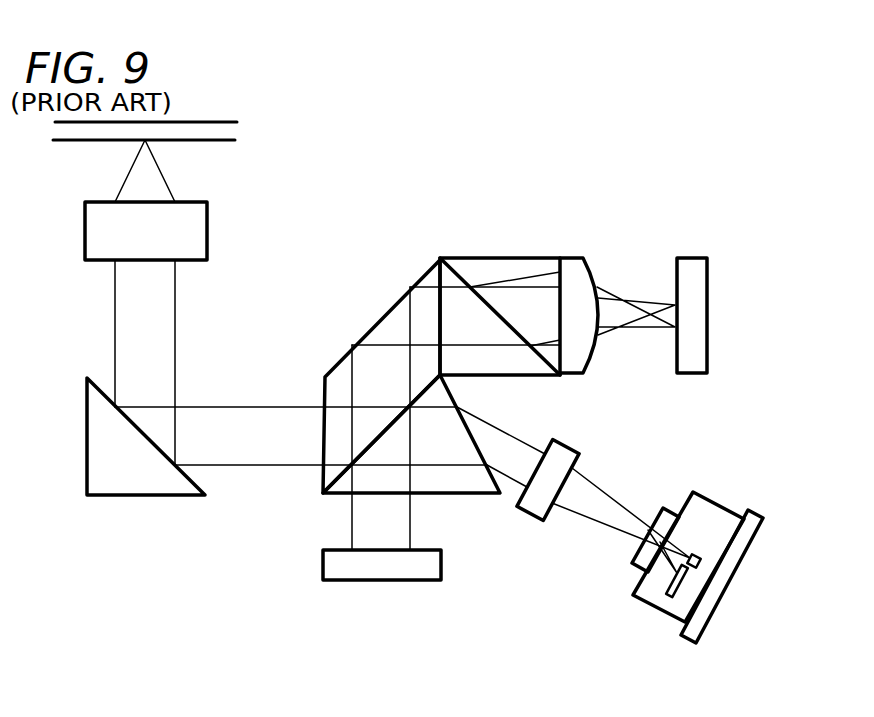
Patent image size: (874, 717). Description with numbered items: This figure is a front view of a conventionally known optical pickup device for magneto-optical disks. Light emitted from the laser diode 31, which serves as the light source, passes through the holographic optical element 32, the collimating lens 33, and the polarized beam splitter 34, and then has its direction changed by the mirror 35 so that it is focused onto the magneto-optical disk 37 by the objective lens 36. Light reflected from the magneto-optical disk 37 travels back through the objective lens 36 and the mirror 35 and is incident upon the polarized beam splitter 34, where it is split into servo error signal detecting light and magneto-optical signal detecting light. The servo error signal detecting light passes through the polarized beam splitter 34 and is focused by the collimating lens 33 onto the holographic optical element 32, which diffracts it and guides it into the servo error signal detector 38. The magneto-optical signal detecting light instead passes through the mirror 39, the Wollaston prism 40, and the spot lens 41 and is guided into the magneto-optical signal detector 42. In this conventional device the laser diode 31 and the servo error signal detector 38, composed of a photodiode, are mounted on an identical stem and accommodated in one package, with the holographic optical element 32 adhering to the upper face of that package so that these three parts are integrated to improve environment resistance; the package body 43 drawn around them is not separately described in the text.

The laser diode 31 is at (697, 556).
The holographic optical element 32 is at (672, 507).
The collimating lens 33 is at (567, 447).
The polarized beam splitter 34 is at (460, 497).
The mirror 35 is at (128, 497).
The objective lens 36 is at (207, 225).
The magneto-optical disk 37 is at (240, 128).
The servo error signal detector 38 is at (683, 582).
The mirror 39 is at (380, 316).
The Wollaston prism 40 is at (490, 257).
The spot lens 41 is at (572, 257).
The magneto-optical signal detector 42 is at (695, 257).
The housing 43 is at (662, 617).